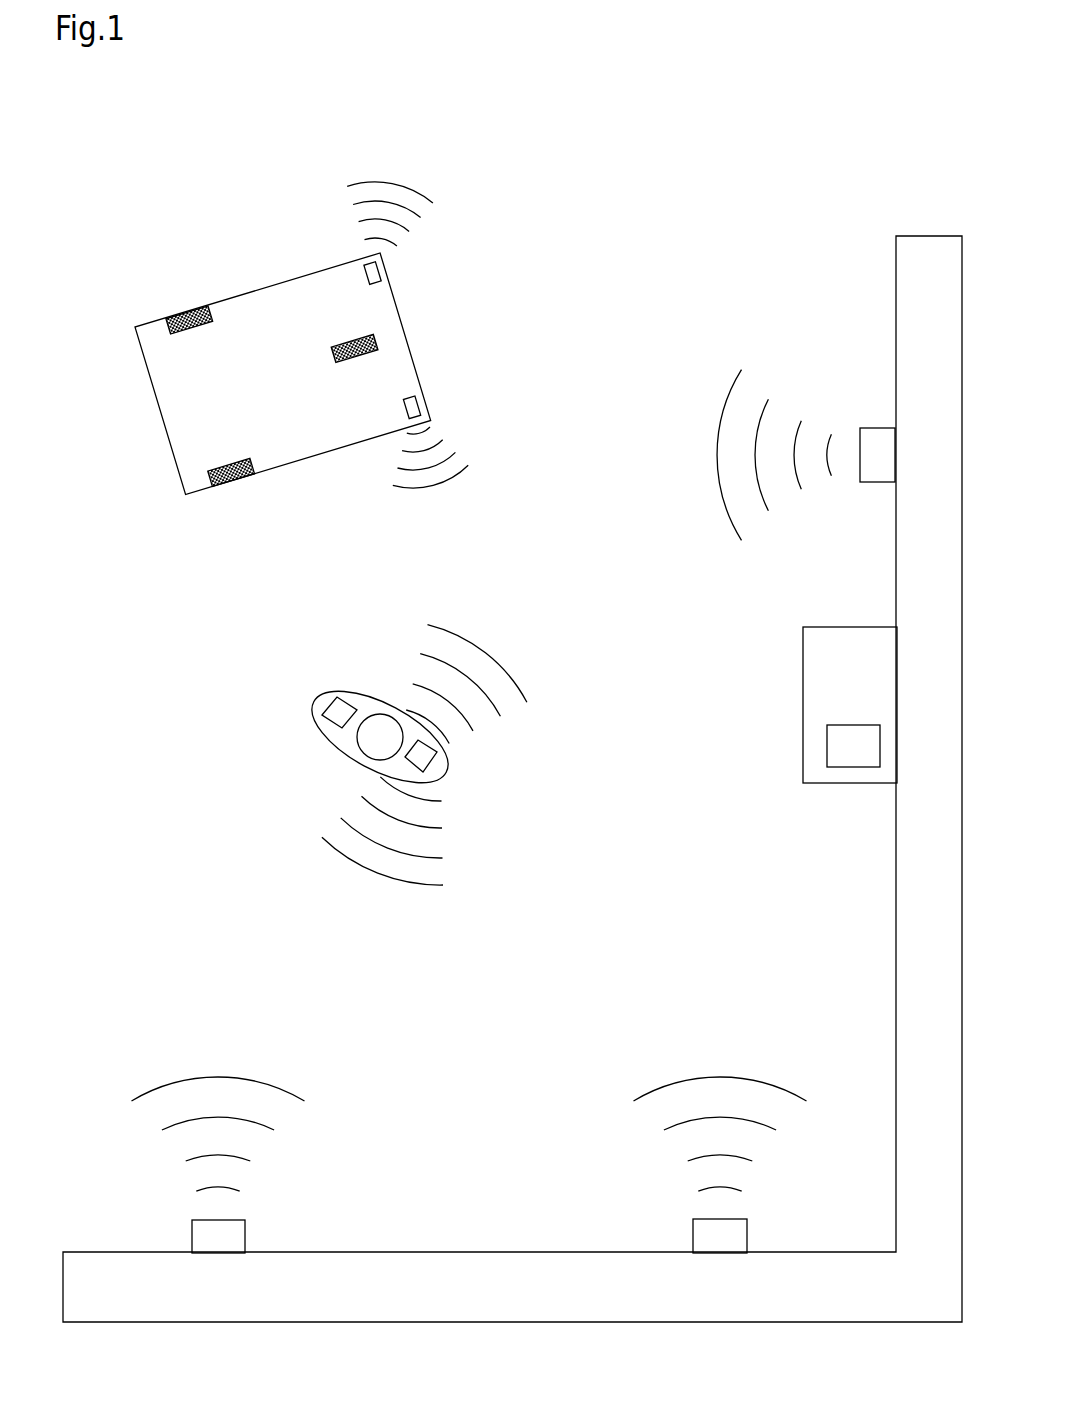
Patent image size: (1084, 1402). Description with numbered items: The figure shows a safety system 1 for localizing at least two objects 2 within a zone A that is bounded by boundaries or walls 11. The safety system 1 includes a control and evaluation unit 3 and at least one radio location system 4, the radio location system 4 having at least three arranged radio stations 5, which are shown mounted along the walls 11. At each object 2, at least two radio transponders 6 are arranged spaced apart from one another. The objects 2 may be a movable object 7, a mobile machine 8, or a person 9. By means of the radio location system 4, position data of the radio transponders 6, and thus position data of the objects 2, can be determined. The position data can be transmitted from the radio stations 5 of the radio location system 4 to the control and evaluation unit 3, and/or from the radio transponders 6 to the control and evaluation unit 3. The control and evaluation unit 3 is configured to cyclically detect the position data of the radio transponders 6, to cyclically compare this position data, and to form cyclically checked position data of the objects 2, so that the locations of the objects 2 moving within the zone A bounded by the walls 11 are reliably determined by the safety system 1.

The safety system 1 is at (738, 103).
The zone A is at (602, 157).
The object 2 is at (252, 290).
The control and evaluation unit 3 is at (827, 783).
The radio location system 4 is at (478, 293).
The radio stations 5 is at (877, 465).
The radio transponder 6 is at (365, 270).
The movable object 7 is at (339, 440).
The movable machine 8 is at (290, 465).
The person 9 is at (347, 747).
The wall/boundary 11 is at (896, 300).